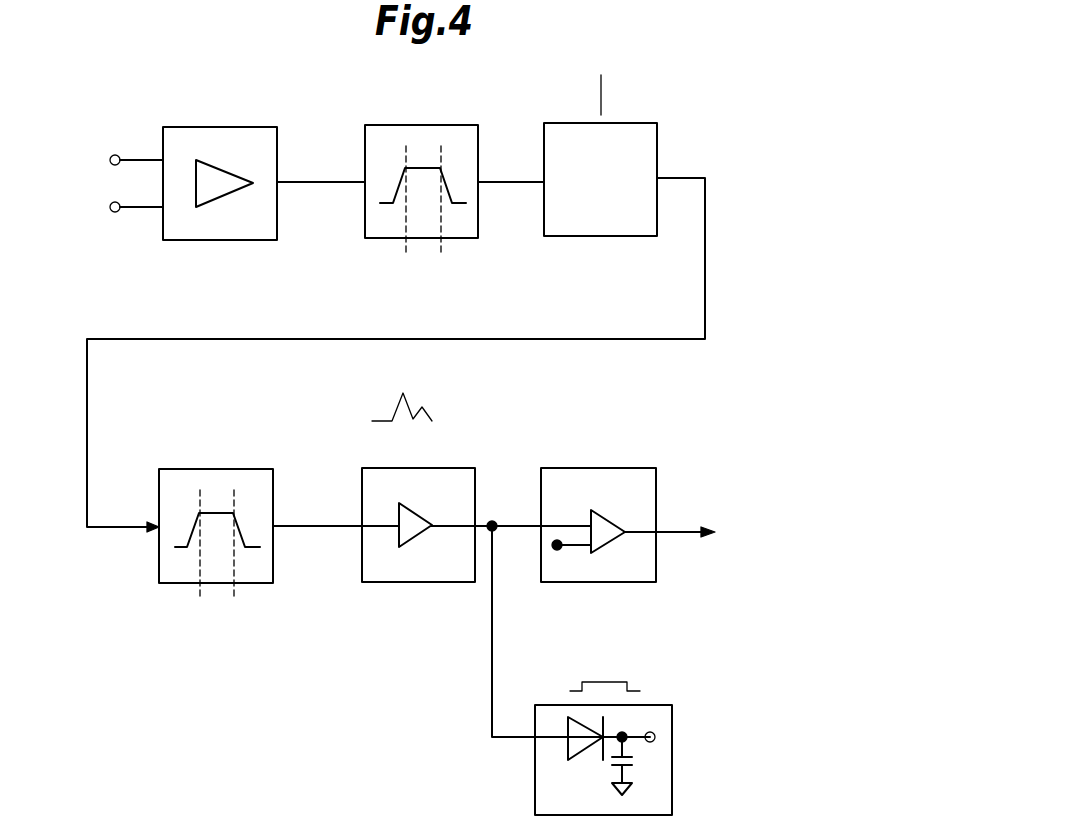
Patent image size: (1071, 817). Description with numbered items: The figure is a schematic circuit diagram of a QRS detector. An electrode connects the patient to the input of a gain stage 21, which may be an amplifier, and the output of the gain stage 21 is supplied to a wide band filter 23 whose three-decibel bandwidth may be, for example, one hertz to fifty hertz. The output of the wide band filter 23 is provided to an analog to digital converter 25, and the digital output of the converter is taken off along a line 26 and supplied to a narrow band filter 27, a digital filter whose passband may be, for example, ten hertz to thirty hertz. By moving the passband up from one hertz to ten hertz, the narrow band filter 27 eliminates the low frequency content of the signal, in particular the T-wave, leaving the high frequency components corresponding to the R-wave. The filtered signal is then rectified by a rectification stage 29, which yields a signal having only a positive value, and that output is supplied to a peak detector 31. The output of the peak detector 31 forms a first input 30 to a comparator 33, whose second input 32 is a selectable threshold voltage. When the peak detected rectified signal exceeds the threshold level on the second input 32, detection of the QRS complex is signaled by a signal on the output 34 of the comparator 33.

The gain stage 21 is at (221, 240).
The wide band filter 23 is at (365, 225).
The analog to digital converter 25 is at (657, 145).
The line 26 is at (480, 339).
The narrow band filter 27 is at (159, 561).
The rectification stage 29 is at (362, 567).
The first input 30 is at (568, 525).
The peak detector 31 is at (672, 743).
The second input 32 is at (557, 543).
The comparator 33 is at (656, 490).
The output 34 is at (679, 532).